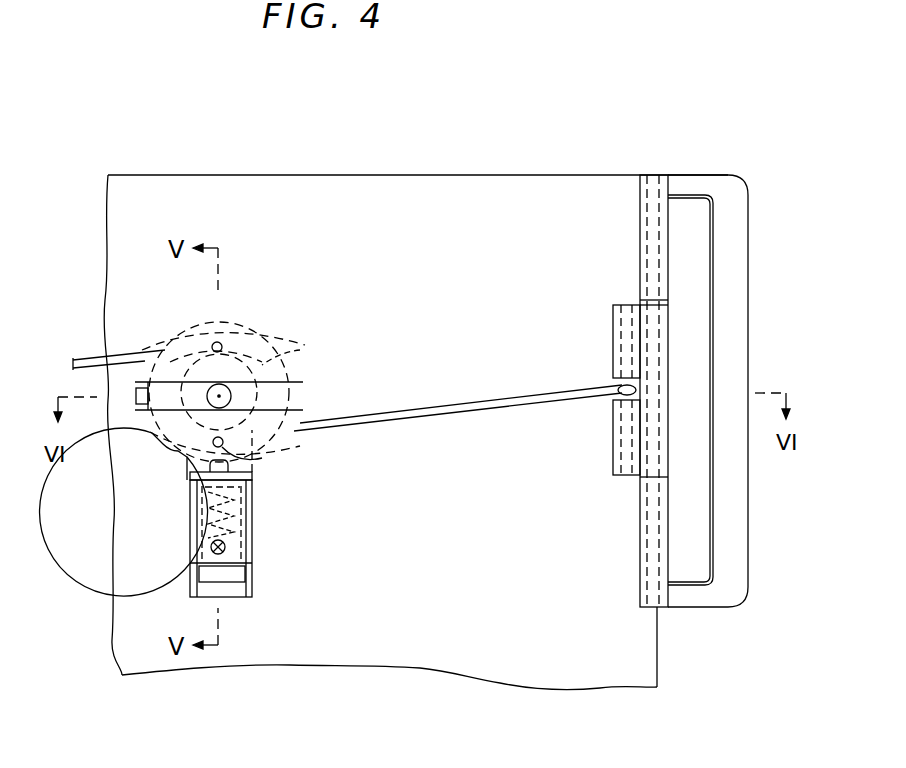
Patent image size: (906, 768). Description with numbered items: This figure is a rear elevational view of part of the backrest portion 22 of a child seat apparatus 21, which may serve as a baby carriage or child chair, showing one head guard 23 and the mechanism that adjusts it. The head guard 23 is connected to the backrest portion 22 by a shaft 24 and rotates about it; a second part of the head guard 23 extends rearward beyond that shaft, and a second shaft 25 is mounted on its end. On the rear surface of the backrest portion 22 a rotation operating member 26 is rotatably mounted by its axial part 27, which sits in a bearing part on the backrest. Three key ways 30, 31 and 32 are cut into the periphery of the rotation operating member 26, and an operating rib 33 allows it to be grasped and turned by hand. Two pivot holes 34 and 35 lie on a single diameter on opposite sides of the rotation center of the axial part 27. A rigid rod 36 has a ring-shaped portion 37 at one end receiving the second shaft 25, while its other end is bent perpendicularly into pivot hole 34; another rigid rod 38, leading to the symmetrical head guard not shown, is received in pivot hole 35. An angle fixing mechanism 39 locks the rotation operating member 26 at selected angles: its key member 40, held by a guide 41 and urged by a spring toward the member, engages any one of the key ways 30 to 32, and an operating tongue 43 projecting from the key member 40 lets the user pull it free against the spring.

The child seat apparatus 21 is at (474, 144).
The backrest portion 22 is at (305, 172).
The head guard 23 is at (700, 172).
The shaft 24 is at (660, 555).
The second shaft 25 is at (623, 440).
The rotation operating member 26 is at (158, 323).
The axial part 27 is at (288, 342).
The key way 30 is at (186, 478).
The key way 31 is at (165, 448).
The key way 32 is at (136, 395).
The operating rib 33 is at (300, 378).
The pivot hole 34 is at (262, 458).
The pivot hole 35 is at (221, 344).
The rigid rod 36 is at (460, 408).
The ring-shaped portion 37 is at (636, 390).
The rigid rod 38 is at (90, 360).
The angle fixing mechanism 39 is at (254, 529).
The key member 40 is at (262, 473).
The guide 41 is at (252, 548).
The operating tongue 43 is at (200, 589).